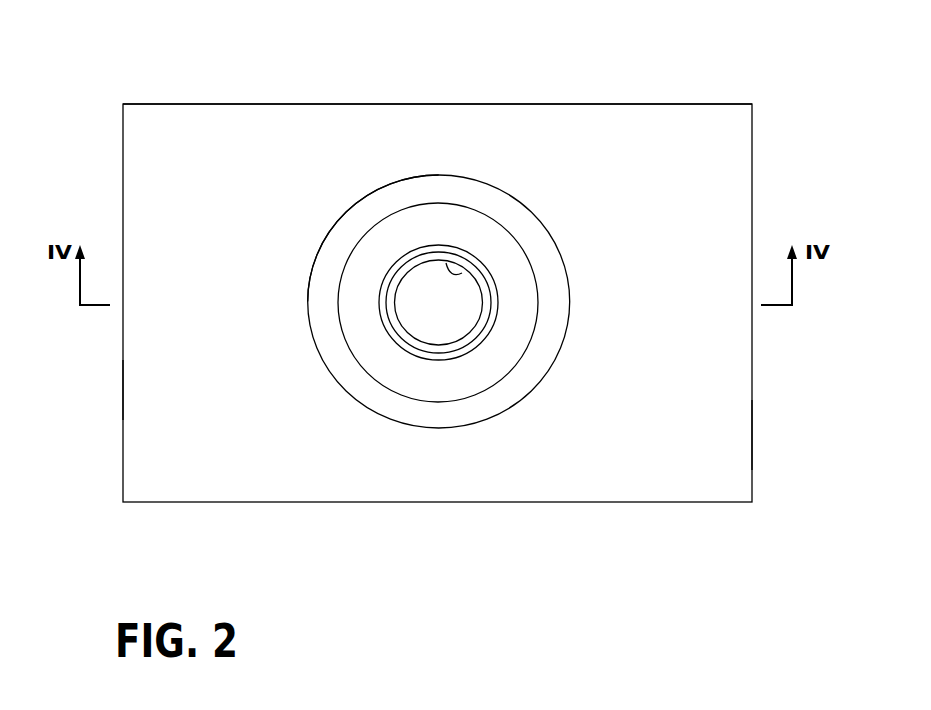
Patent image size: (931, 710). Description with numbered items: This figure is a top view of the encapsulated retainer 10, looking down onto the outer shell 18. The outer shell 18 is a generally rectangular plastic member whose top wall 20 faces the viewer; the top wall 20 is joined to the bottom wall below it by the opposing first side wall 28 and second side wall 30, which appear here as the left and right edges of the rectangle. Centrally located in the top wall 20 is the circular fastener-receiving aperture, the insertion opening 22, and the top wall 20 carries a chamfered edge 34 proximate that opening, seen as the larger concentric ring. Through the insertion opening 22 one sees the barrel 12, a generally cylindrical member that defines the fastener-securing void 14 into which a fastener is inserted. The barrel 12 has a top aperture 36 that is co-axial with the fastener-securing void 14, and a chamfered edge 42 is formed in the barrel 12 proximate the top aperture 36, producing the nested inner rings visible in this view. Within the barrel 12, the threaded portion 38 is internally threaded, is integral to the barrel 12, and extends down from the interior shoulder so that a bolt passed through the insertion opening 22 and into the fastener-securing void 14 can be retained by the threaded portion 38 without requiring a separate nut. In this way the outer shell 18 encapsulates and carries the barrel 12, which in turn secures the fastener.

The encapsulated retainer 10 is at (474, 26).
The barrel 12 is at (512, 392).
The fastener-securing void 14 is at (434, 312).
The outer shell 18 is at (110, 147).
The top wall 20 is at (210, 168).
The insertion opening 22 is at (362, 223).
The first side wall 28 is at (123, 390).
The second side wall 30 is at (752, 439).
The chamfered edge 34 is at (383, 200).
The top aperture 36 is at (362, 339).
The threaded portion 38 is at (462, 273).
The chamfered edge 42 is at (392, 380).